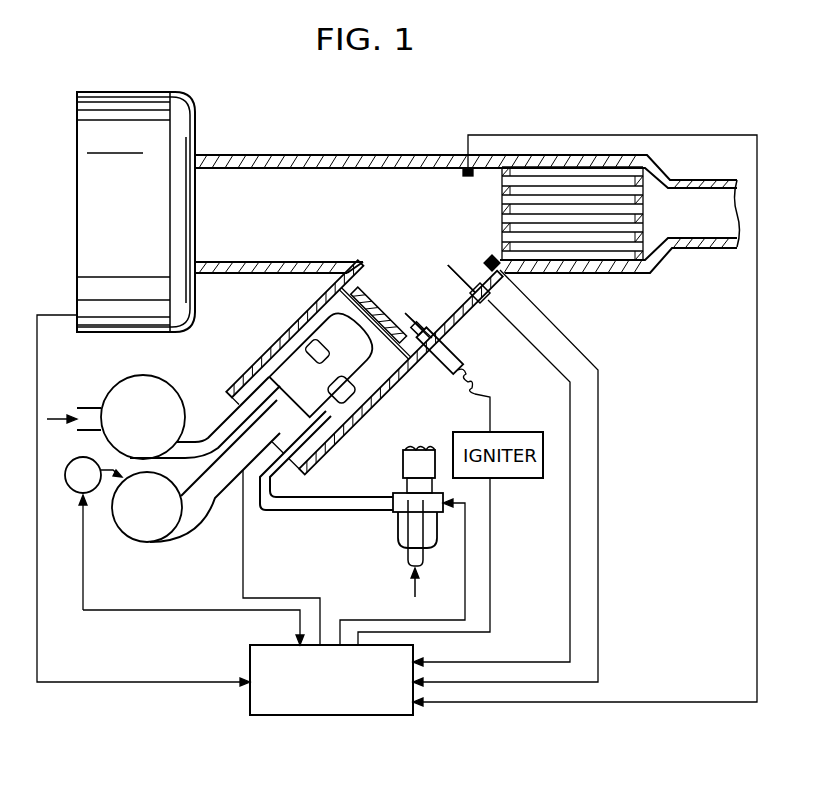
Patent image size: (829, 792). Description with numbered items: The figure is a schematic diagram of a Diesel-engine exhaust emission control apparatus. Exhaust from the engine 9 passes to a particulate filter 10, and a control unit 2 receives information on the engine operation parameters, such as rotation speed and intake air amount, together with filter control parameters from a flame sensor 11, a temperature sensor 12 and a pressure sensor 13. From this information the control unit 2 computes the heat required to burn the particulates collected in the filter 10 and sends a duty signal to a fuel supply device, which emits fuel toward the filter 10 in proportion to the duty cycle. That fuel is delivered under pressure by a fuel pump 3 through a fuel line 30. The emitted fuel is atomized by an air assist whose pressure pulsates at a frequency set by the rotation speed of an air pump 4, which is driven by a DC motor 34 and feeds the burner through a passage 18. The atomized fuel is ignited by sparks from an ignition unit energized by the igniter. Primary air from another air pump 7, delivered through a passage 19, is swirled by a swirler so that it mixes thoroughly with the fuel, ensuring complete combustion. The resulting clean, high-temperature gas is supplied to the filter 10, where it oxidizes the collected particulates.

The control unit 2 is at (333, 715).
The fuel pump 3 is at (400, 509).
The air pump 4 is at (150, 383).
The air pump 7 is at (152, 541).
The engine 9 is at (113, 92).
The filter 10 is at (596, 225).
The flame sensor 11 is at (479, 303).
The temperature sensor 12 is at (487, 257).
The pressure sensor 13 is at (468, 180).
The primary air passage 18 is at (223, 423).
The secondary air passage 19 is at (209, 493).
The fuel pipe 30 is at (300, 510).
The DC motor 34 is at (68, 484).